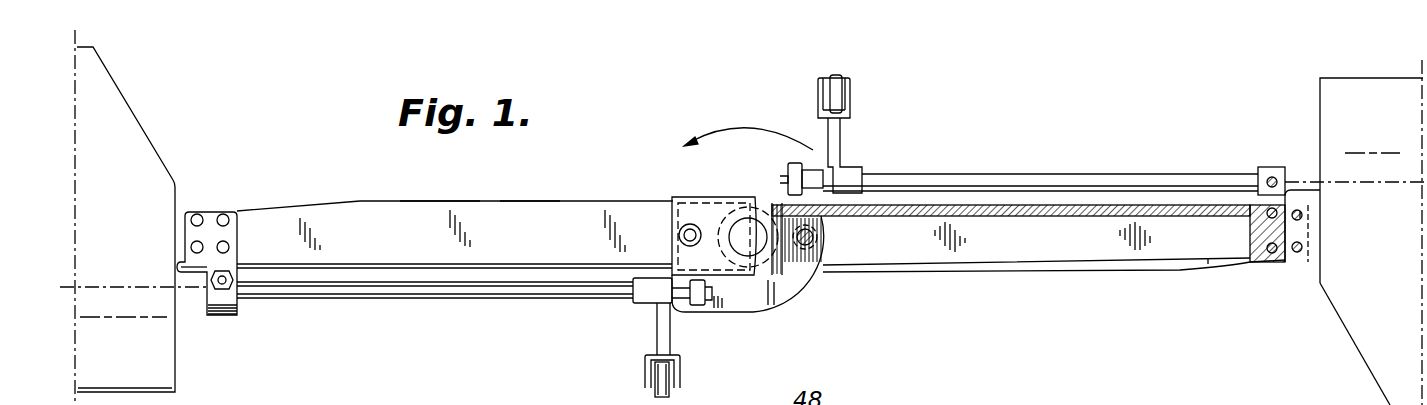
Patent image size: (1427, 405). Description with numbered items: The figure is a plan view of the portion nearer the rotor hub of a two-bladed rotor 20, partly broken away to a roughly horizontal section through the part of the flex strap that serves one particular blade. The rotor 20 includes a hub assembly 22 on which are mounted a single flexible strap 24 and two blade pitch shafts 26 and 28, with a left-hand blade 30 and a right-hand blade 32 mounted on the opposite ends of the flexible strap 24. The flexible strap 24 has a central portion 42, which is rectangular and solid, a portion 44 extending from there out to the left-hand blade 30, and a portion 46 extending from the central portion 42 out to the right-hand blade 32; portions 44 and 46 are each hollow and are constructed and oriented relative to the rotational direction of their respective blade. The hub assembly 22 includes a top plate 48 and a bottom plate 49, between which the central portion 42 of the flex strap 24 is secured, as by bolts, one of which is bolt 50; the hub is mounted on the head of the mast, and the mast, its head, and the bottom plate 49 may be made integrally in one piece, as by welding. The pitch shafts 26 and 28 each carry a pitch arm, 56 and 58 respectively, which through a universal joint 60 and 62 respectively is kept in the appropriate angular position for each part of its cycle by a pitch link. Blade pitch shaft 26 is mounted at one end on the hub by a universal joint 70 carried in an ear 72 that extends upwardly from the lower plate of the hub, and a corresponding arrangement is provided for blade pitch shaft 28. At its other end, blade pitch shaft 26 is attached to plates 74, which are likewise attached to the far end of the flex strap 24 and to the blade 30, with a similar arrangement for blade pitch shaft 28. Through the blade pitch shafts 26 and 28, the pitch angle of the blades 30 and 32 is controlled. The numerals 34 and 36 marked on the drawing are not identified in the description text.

The rotor 20 is at (521, 203).
The hub assembly 22 is at (793, 287).
The flexible strap 24 is at (640, 181).
The blade pitch shaft 26 is at (455, 293).
The blade pitch shaft 28 is at (1008, 175).
The blade 30 is at (165, 367).
The blade 32 is at (1327, 110).
The tube 34 is at (318, 270).
The arm 36 is at (362, 217).
The central portion 42 is at (750, 170).
The portion 44 is at (440, 205).
The portion 46 is at (945, 205).
The top plate 48 is at (699, 205).
The bottom plate 49 is at (753, 307).
The bolt 50 is at (680, 233).
The pitch arm 56 is at (658, 333).
The pitch arm 58 is at (840, 180).
The universal joint 60 is at (653, 397).
The universal joint 62 is at (840, 85).
The universal joint 70 is at (708, 295).
The ear 72 is at (698, 297).
The plates 74 is at (237, 234).